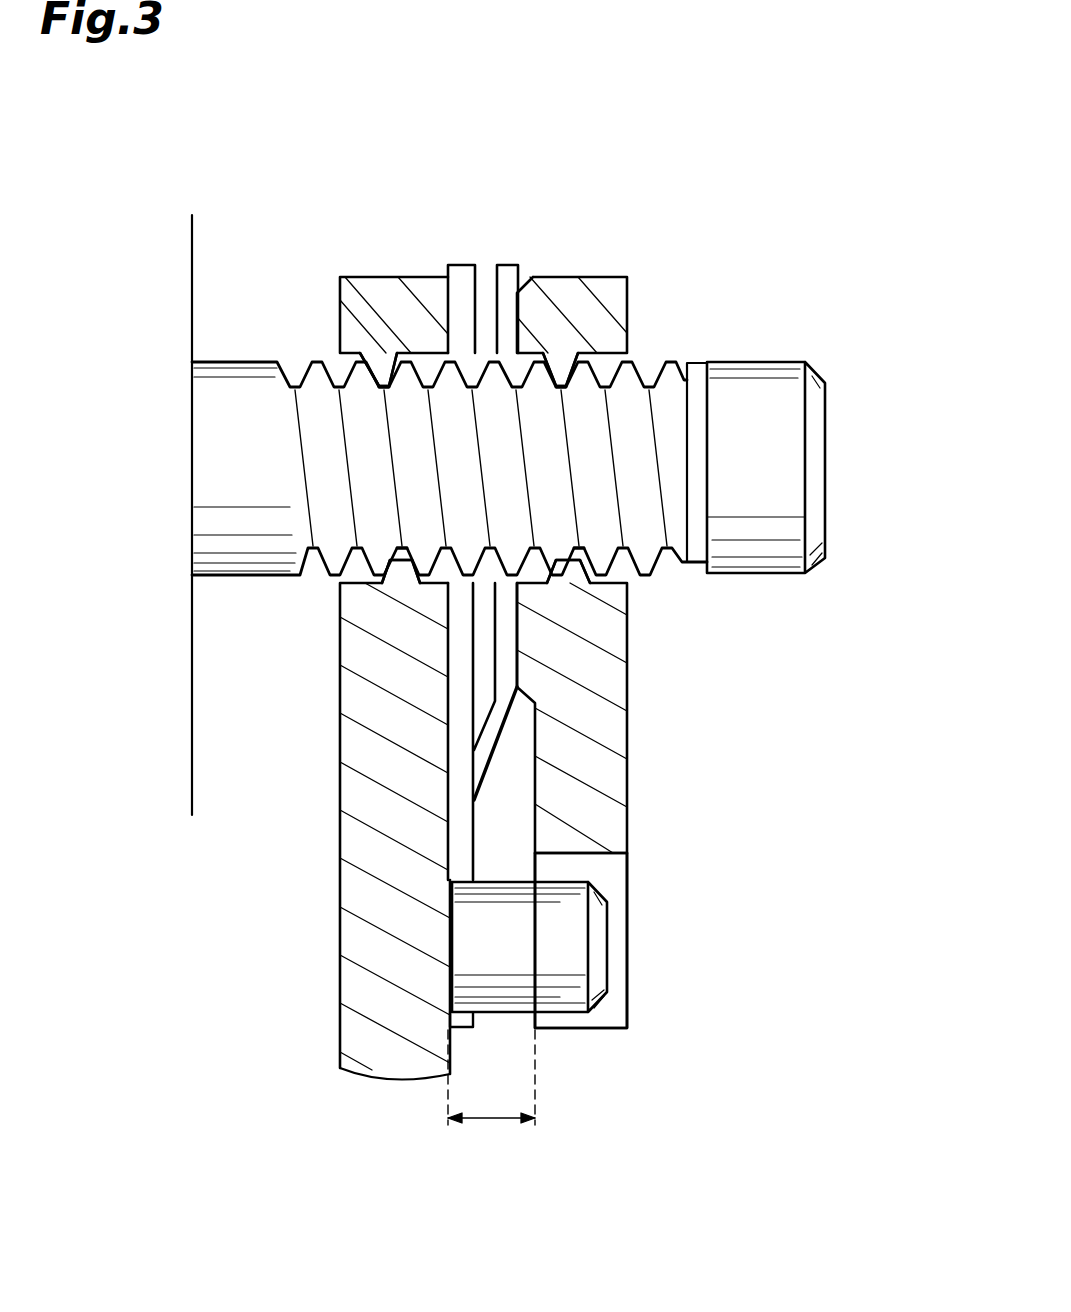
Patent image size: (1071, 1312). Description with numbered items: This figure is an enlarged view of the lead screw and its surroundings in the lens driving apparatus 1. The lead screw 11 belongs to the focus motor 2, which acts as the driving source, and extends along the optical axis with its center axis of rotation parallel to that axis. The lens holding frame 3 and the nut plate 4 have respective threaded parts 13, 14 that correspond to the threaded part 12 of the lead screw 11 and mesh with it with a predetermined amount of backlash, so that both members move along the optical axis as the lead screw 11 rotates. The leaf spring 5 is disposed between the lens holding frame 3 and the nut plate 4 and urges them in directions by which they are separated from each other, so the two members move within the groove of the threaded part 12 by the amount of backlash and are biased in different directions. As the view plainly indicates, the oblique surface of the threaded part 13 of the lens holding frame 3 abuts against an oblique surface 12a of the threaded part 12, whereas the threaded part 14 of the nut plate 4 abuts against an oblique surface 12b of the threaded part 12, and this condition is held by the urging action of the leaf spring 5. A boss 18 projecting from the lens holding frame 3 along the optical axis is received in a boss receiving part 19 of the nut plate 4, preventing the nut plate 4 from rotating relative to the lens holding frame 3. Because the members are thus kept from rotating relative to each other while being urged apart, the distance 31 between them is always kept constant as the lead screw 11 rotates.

The lens driving apparatus 1 is at (772, 221).
The focus motor 2 is at (118, 298).
The lens holding frame 3 is at (382, 295).
The nut plate 4 is at (607, 293).
The leaf spring 5 is at (490, 228).
The lead screw 11 is at (780, 471).
The threaded part 12 is at (652, 360).
The oblique surface 12a is at (366, 372).
The oblique surface 12b is at (561, 367).
The threaded part 13 is at (380, 378).
The threaded part 14 is at (557, 366).
The boss 18 is at (577, 930).
The boss receiving part 19 is at (610, 1007).
The distance 31 is at (490, 1122).